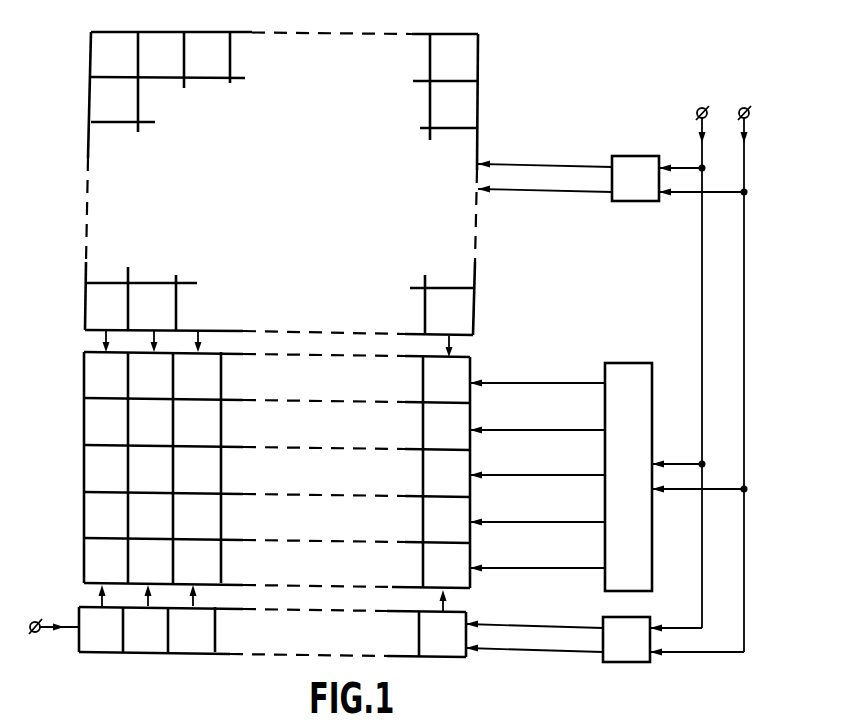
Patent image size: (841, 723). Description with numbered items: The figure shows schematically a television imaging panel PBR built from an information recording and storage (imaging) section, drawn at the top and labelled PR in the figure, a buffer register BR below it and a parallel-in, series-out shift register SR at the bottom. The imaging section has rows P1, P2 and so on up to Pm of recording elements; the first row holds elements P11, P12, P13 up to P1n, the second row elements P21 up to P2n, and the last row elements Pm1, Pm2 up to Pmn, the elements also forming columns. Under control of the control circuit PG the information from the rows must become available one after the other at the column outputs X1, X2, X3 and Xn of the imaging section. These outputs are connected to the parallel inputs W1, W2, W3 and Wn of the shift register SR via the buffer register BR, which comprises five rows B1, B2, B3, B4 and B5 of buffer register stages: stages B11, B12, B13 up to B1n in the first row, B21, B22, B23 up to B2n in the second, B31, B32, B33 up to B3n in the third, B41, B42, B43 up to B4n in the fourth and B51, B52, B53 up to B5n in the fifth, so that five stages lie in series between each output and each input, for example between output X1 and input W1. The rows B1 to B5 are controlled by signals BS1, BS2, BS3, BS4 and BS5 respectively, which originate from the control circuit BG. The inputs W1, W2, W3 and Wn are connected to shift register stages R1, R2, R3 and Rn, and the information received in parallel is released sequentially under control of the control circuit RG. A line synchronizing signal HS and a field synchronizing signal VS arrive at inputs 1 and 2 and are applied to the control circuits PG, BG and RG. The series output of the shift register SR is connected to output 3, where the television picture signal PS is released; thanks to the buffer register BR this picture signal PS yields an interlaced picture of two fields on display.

The input 1 is at (716, 128).
The input 2 is at (759, 128).
The output 3 is at (37, 622).
The picture register PR is at (281, 168).
The television imaging panel PBR is at (546, 277).
The buffer register BR is at (302, 457).
The shift register SR is at (272, 647).
The control circuit PG is at (637, 201).
The control circuit BG is at (629, 363).
The control circuit RG is at (627, 662).
The line synchronizing signal HS is at (700, 140).
The field synchronizing signal VS is at (742, 140).
The picture signal PS is at (59, 629).
The row of elements P1 is at (91, 53).
The row of elements P2 is at (91, 99).
The row of elements Pm is at (85, 306).
The row of buffer register stages B1 is at (84, 377).
The row of buffer register stages B2 is at (84, 423).
The row of buffer register stages B3 is at (84, 470).
The row of buffer register stages B4 is at (84, 517).
The row of buffer register stages B5 is at (84, 563).
The control signal BS1 is at (478, 387).
The control signal BS2 is at (478, 434).
The control signal BS3 is at (478, 479).
The control signal BS4 is at (478, 526).
The control signal BS5 is at (478, 572).
The output X1 is at (118, 342).
The output X2 is at (166, 342).
The output X3 is at (210, 342).
The output Xn is at (438, 344).
The parallel input W1 is at (116, 597).
The parallel input W2 is at (162, 597).
The parallel input W3 is at (207, 597).
The parallel input Wn is at (458, 599).
The element P11 is at (113, 55).
The element P12 is at (159, 55).
The element P13 is at (205, 55).
The element P1n is at (450, 57).
The element P21 is at (113, 100).
The element P2n is at (450, 104).
The element Pm1 is at (105, 307).
The element Pm2 is at (149, 307).
The element Pmn is at (445, 312).
The buffer register stage B11 is at (105, 375).
The buffer register stage B12 is at (150, 375).
The buffer register stage B13 is at (195, 375).
The buffer register stage B1n is at (443, 380).
The buffer register stage B21 is at (105, 421).
The buffer register stage B22 is at (150, 421).
The buffer register stage B23 is at (195, 421).
The buffer register stage B2n is at (443, 426).
The buffer register stage B31 is at (105, 468).
The buffer register stage B32 is at (150, 468).
The buffer register stage B33 is at (195, 468).
The buffer register stage B3n is at (443, 473).
The buffer register stage B41 is at (105, 515).
The buffer register stage B42 is at (150, 515).
The buffer register stage B43 is at (195, 515).
The buffer register stage B4n is at (443, 520).
The buffer register stage B51 is at (105, 561).
The buffer register stage B52 is at (150, 561).
The buffer register stage B53 is at (195, 561).
The buffer register stage B5n is at (443, 566).
The shift register stage R1 is at (98, 630).
The shift register stage R2 is at (143, 630).
The shift register stage R3 is at (190, 630).
The shift register stage Rn is at (436, 635).